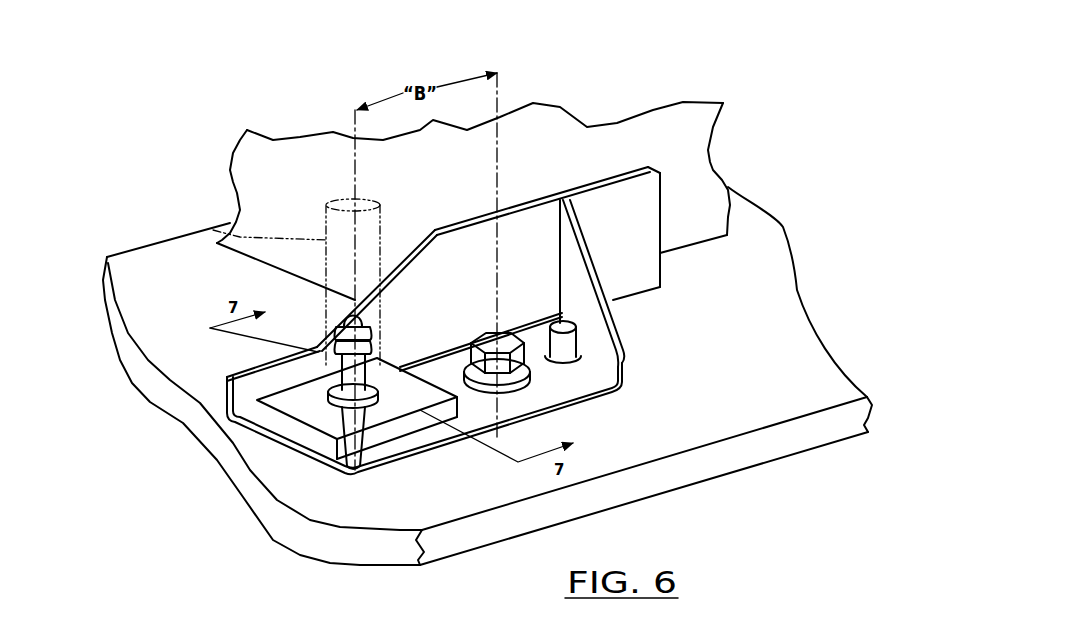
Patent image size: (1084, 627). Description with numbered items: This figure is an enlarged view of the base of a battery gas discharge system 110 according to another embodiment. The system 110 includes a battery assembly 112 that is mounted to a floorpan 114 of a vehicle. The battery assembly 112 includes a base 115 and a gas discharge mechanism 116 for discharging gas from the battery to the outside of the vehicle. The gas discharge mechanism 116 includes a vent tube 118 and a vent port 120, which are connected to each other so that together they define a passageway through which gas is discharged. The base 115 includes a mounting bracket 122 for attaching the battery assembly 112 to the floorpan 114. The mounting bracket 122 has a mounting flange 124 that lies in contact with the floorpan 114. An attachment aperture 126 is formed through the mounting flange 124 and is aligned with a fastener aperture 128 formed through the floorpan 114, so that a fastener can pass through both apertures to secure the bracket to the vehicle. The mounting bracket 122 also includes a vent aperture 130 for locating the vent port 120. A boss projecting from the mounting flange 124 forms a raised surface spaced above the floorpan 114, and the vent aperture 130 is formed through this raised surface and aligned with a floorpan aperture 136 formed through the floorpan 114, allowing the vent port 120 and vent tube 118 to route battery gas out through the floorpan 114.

The battery gas discharge system 110 is at (785, 112).
The battery assembly 112 is at (773, 155).
The floorpan 114 is at (165, 343).
The base 115 is at (797, 214).
The gas discharge mechanism 116 is at (290, 290).
The vent tube 118 is at (213, 230).
The vent port 120 is at (345, 410).
The mounting bracket 122 is at (642, 259).
The mounting flange 124 is at (570, 373).
The attachment aperture 126 is at (474, 492).
The fastener aperture 128 is at (451, 472).
The vent aperture 130 is at (443, 381).
The floorpan aperture 136 is at (341, 511).